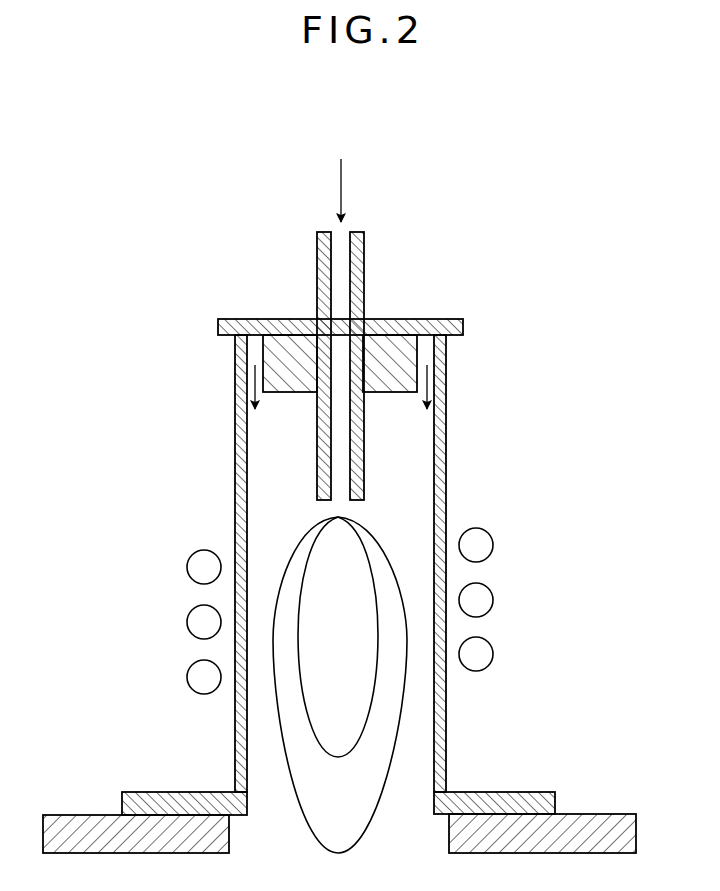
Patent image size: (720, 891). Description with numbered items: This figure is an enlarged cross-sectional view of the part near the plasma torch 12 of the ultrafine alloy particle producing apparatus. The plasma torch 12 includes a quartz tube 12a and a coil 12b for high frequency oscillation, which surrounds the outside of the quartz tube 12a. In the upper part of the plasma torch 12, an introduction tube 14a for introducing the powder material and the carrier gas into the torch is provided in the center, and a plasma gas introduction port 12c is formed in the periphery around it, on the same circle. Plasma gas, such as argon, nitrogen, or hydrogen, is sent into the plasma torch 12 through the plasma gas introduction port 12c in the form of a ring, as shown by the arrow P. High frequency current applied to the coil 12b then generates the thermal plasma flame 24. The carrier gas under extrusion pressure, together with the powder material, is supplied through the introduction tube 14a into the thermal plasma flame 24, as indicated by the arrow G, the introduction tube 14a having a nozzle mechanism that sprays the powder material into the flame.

The plasma torch 12 is at (487, 218).
The quartz tube 12a is at (235, 475).
The coil for high frequency oscillation 12b is at (197, 565).
The plasma gas introduction port 12c is at (251, 353).
The introduction tube 14a is at (364, 262).
The thermal plasma flame 24 is at (350, 704).
The arrow indicating carrier gas and powder material supply G is at (341, 190).
The arrow indicating plasma gas flow P is at (247, 383).